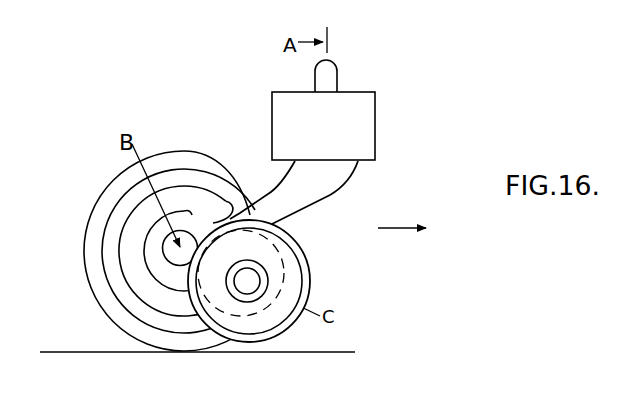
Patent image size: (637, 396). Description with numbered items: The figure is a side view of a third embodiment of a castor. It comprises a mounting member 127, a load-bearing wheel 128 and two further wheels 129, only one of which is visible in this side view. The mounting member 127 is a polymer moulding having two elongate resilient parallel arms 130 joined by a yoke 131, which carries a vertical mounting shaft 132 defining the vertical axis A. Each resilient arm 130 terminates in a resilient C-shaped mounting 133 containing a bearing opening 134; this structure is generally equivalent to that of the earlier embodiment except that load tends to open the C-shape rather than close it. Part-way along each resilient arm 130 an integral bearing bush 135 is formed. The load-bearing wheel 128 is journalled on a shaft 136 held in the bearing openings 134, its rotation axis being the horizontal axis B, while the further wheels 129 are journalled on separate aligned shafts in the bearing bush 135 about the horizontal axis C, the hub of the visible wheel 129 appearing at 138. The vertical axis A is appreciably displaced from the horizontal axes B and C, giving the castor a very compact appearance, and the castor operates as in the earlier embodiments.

The mounting member 127 is at (338, 197).
The load-bearing wheel 128 is at (182, 153).
The further wheels 129 is at (280, 329).
The resilient arms 130 is at (298, 197).
The yoke 131 is at (360, 117).
The vertical mounting shaft 132 is at (331, 77).
The C-shaped mounting 133 is at (135, 283).
The bearing opening 134 is at (168, 250).
The bearing bush 135 is at (305, 288).
The shaft 136 is at (172, 254).
The wheel hub 138 is at (258, 277).